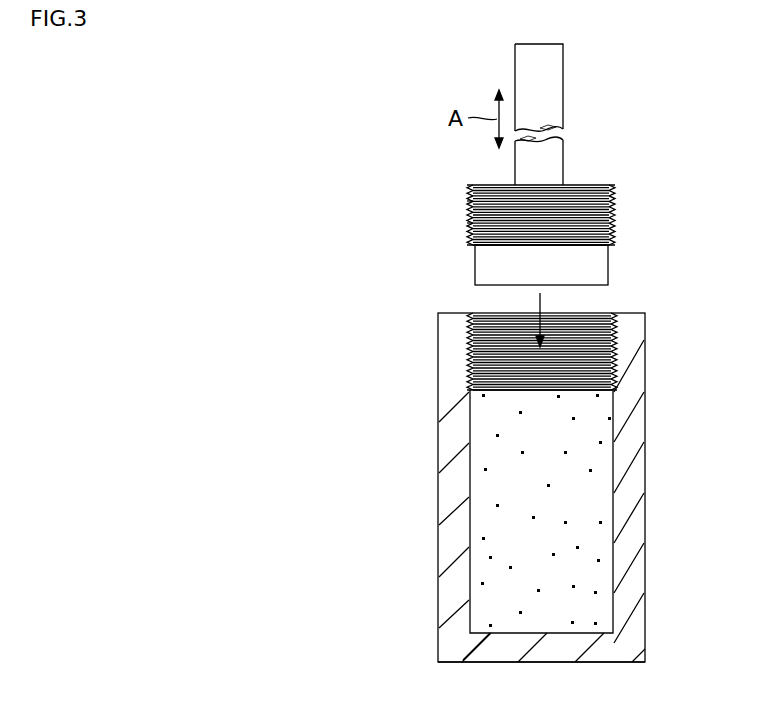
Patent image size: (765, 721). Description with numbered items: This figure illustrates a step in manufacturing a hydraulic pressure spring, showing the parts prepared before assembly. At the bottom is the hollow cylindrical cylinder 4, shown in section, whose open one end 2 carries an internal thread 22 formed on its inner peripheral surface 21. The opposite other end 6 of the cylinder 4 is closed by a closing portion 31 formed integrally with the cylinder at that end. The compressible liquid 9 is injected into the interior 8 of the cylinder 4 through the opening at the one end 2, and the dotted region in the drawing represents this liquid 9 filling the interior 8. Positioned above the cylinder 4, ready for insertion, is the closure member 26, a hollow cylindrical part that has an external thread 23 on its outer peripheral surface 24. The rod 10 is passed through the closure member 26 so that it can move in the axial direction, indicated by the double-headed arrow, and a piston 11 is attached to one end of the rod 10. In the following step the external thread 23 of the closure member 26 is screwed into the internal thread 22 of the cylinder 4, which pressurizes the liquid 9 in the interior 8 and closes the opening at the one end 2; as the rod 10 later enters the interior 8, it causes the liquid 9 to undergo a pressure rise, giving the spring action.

The one end 2 is at (546, 513).
The hollow cylindrical cylinder 4 is at (448, 543).
The other end 6 is at (450, 638).
The interior 8 is at (485, 489).
The compressible liquid 9 is at (603, 523).
The rod 10 is at (555, 152).
The piston 11 is at (593, 268).
The inner peripheral surface 21 is at (606, 468).
The internal thread 22 is at (470, 352).
The external thread 23 is at (612, 211).
The outer peripheral surface 24 is at (468, 223).
The closure member 26 is at (468, 203).
The closing portion 31 is at (537, 655).